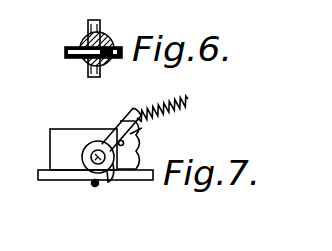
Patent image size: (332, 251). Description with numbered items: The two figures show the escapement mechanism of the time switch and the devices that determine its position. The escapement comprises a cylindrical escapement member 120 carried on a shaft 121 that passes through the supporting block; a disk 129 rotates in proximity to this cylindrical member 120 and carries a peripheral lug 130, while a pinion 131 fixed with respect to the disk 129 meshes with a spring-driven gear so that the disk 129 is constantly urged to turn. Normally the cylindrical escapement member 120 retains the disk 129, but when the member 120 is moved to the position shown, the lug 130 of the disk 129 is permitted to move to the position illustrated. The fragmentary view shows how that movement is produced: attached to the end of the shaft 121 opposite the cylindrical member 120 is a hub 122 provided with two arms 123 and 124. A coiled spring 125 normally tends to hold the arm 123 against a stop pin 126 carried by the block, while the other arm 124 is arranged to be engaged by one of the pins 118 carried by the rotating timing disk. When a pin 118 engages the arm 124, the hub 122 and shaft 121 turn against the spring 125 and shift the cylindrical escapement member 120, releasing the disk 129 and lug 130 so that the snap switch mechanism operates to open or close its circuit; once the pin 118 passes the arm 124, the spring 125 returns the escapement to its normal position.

In FIG. 7, the pins 118 is at (94, 186).
In FIG. 6, the cylindrical escapement member 120 is at (101, 38).
In FIG. 7, the shaft 121 is at (91, 153).
In FIG. 7, the hub 122 is at (136, 145).
In FIG. 7, the arm 123 is at (127, 127).
In FIG. 7, the arm 124 is at (107, 182).
In FIG. 7, the coiled spring 125 is at (173, 101).
In FIG. 7, the stop pin 126 is at (133, 132).
In FIG. 6, the disk 129 is at (86, 39).
In FIG. 6, the peripheral lug 130 is at (89, 27).
In FIG. 6, the pinion 131 is at (68, 58).